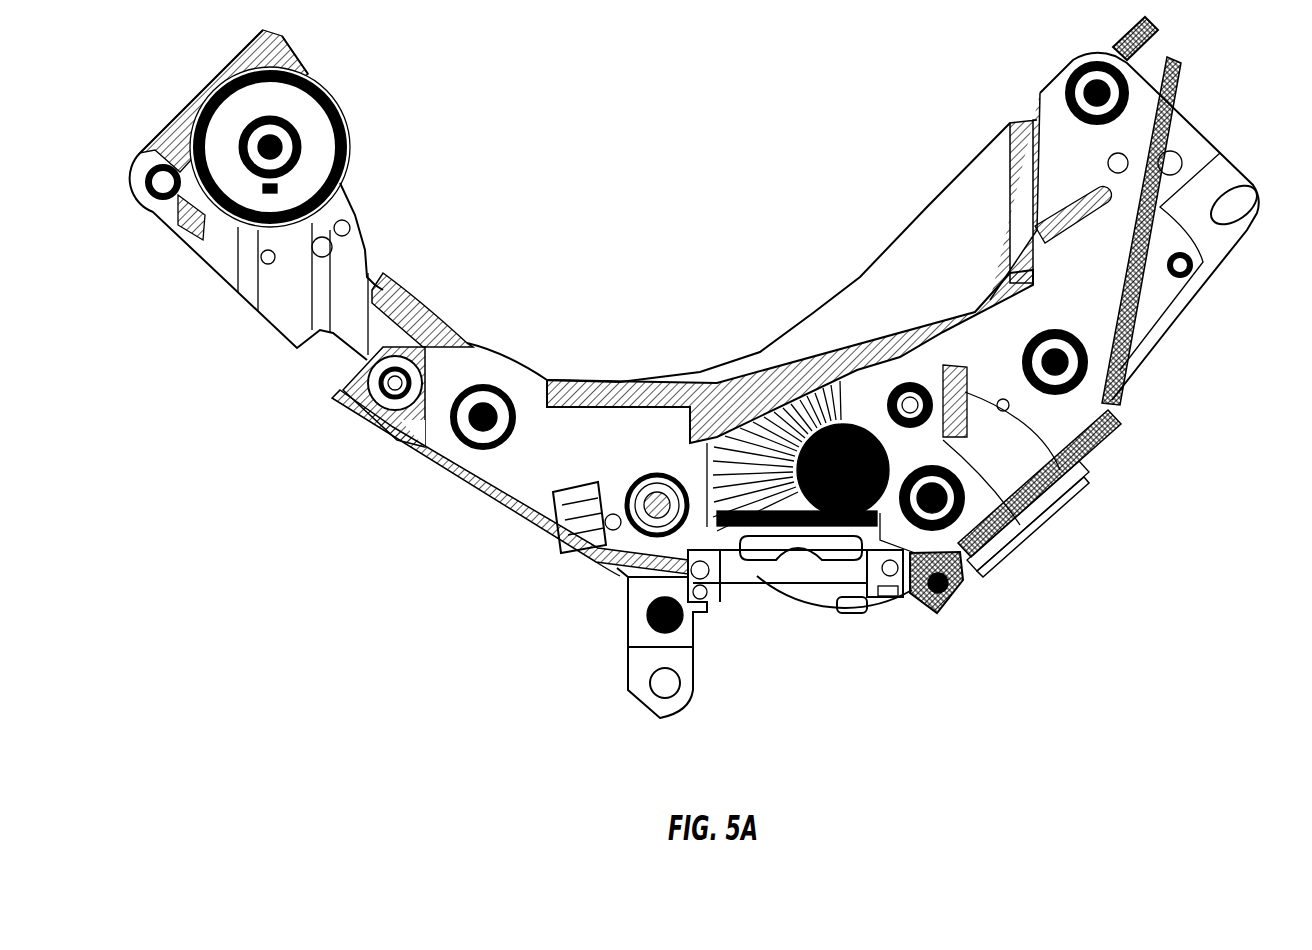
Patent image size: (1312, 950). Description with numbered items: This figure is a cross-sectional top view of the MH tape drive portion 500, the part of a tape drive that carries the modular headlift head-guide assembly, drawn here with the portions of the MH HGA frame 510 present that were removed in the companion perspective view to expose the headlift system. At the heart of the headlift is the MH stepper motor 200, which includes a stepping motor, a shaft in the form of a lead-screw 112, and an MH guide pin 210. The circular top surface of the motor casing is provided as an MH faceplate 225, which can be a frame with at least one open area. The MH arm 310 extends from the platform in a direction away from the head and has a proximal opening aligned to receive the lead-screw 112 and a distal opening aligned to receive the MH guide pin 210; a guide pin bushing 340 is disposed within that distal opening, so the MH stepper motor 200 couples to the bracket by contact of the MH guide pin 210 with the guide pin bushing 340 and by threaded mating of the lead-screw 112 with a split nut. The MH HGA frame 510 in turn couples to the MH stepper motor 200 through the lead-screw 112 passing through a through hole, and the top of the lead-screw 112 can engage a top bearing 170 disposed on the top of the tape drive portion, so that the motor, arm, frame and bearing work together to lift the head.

The MH tape drive portion 500 is at (545, 55).
The MH HGA frame 510 is at (610, 382).
The lead-screw 112 is at (837, 400).
The MH guide pin 210 is at (870, 410).
The guide pin bushing 340 is at (1010, 412).
The MH arm 310 is at (1030, 540).
The top bearing 170 is at (753, 577).
The MH stepper motor 200 is at (817, 613).
The MH faceplate 225 is at (820, 597).